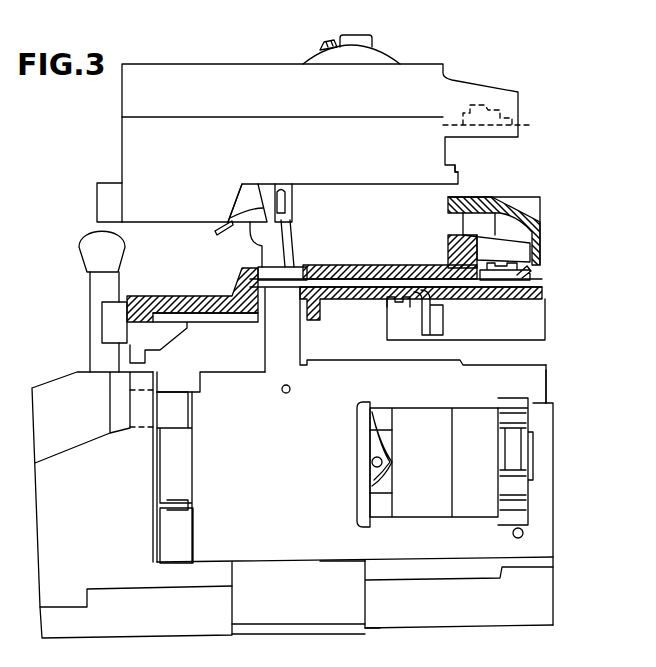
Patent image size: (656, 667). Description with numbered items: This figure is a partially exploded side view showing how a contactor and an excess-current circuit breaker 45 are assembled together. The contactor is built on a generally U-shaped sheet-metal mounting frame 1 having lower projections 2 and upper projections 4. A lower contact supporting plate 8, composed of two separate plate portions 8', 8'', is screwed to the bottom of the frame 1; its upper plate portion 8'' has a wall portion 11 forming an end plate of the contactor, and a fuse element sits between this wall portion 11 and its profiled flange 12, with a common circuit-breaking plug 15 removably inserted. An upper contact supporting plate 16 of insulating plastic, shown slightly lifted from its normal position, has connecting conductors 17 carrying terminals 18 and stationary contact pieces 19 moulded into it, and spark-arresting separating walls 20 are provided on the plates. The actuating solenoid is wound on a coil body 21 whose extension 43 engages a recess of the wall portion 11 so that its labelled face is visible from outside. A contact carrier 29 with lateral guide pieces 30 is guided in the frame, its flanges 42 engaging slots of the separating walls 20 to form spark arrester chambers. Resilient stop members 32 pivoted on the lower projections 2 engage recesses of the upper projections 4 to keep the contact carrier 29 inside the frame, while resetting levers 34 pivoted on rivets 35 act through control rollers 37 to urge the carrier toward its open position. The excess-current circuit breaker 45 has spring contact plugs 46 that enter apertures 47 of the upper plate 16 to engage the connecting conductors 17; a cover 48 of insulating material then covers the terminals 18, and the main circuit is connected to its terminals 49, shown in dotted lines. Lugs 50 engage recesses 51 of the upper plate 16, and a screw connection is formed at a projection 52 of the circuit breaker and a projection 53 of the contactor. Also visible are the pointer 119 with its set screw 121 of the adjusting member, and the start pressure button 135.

The mounting frame 1 is at (284, 478).
The lower projections 2 is at (460, 542).
The upper projections 4 is at (480, 398).
The lower contact supporting plate 8 is at (330, 620).
The plate portion 8' is at (453, 569).
The upper plate portion 8'' is at (477, 613).
The wall portion 11 is at (139, 383).
The profiled flange 12 is at (77, 383).
The circuit-breaking plug 15 is at (97, 287).
The upper contact supporting plate 16 is at (235, 302).
The connecting conductors 17 is at (343, 283).
The terminals 18 is at (508, 277).
The stationary contact pieces 19 is at (443, 323).
The spark-arresting separating walls 20 is at (535, 325).
The coil body 21 is at (182, 413).
The contact carrier 29 is at (433, 473).
The guide pieces 30 is at (480, 471).
The stop members 32 is at (523, 488).
The resetting levers 34 is at (368, 450).
The rivets 35 is at (286, 394).
The control rollers 37 is at (393, 455).
The flanges 42 is at (550, 390).
The extension 43 is at (146, 430).
The excess-current circuit breaker 45 is at (313, 145).
The spring contact plugs 46 is at (287, 203).
The apertures 47 is at (297, 267).
The cover 48 is at (510, 213).
The terminals 49 is at (530, 125).
The lugs 50 is at (458, 176).
The recesses 51 is at (447, 250).
The projection 52 is at (108, 205).
The projection 53 is at (110, 325).
The pointer 119 is at (320, 52).
The set screw 121 is at (328, 41).
The start pressure button 135 is at (372, 40).